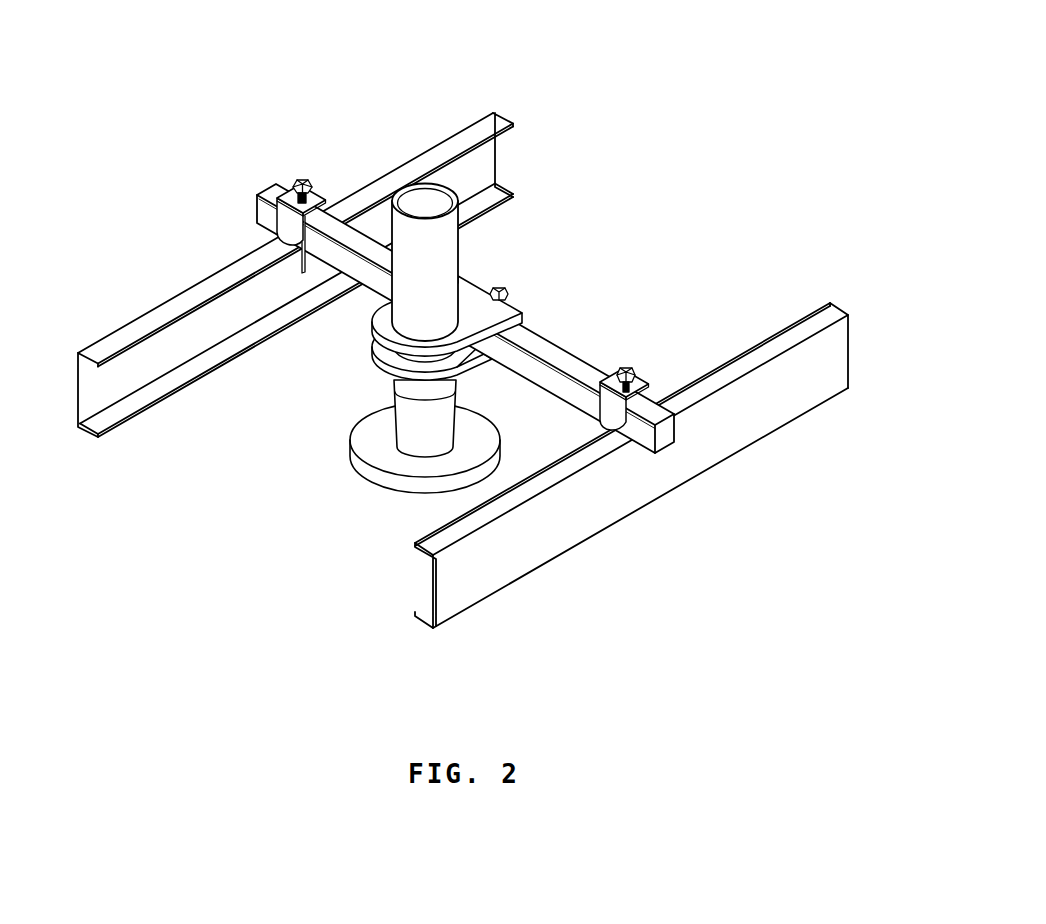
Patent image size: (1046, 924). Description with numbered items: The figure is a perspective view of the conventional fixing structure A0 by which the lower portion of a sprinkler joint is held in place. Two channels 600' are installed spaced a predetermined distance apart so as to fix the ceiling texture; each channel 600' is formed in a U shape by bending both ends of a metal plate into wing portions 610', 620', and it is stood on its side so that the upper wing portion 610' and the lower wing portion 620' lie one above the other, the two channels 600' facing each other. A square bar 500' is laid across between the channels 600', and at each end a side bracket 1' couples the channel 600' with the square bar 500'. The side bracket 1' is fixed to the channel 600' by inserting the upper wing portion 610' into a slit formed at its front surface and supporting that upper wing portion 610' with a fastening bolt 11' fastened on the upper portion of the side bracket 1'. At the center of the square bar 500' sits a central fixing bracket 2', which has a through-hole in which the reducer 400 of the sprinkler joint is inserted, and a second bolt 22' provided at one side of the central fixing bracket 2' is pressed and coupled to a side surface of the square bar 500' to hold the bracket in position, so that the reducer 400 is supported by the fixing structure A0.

The fixing structure A0 is at (614, 96).
The side bracket 1' is at (502, 264).
The fastening bolt 11' is at (496, 255).
The central fixing bracket 2' is at (391, 354).
The second bolt 22' is at (536, 267).
The reducer 400 is at (452, 242).
The square bar 500' is at (465, 318).
The channel 600' is at (463, 370).
The upper wing portion 610' is at (199, 349).
The lower wing portion 620' is at (199, 402).